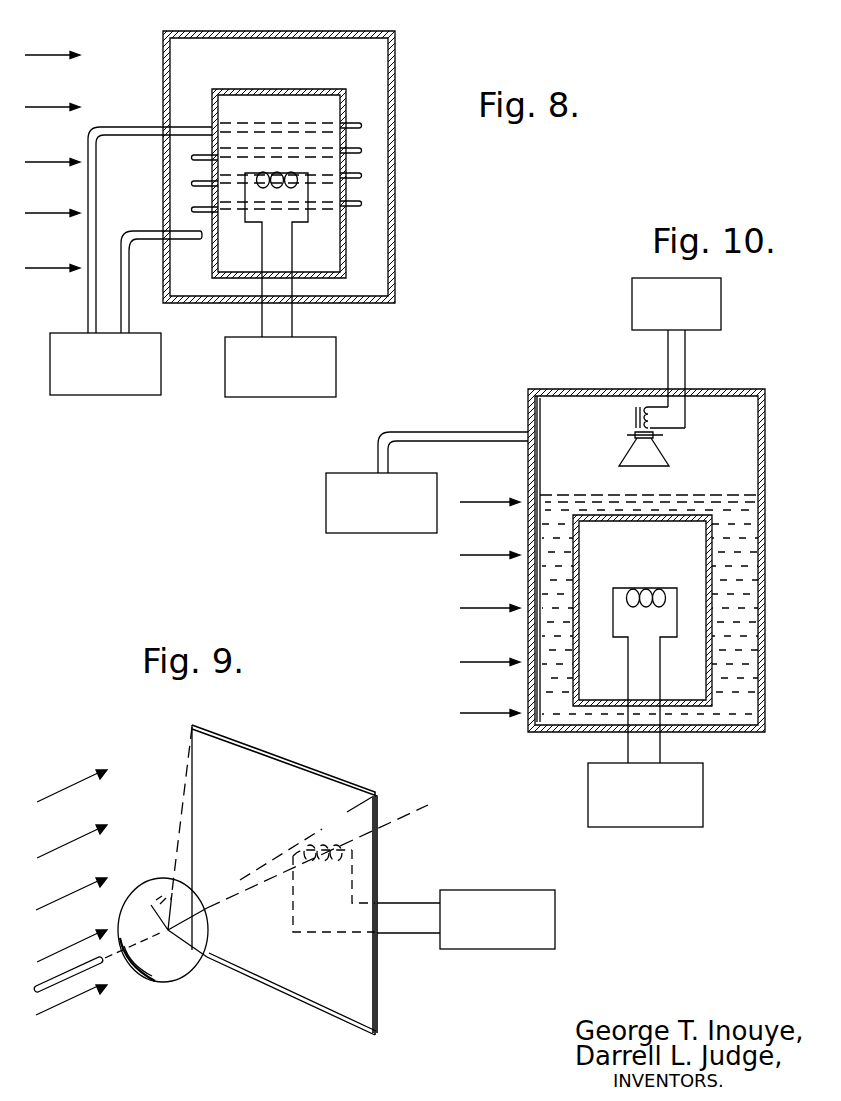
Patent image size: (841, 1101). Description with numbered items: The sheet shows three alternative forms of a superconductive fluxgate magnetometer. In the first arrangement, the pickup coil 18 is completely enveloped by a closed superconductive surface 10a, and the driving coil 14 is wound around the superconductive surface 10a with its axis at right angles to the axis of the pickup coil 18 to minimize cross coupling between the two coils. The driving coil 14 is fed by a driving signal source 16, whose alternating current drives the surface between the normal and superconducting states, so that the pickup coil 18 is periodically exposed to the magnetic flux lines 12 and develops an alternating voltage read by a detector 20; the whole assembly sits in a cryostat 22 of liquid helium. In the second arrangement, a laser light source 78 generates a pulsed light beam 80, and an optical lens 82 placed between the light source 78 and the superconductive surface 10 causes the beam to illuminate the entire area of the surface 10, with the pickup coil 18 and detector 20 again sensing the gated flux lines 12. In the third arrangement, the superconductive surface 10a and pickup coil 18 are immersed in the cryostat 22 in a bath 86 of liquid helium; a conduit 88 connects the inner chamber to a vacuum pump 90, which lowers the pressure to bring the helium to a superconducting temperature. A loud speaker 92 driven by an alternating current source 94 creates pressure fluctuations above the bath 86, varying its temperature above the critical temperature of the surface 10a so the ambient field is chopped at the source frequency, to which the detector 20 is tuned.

In FIG. 9, the superconductive surface 10 is at (318, 773).
In FIG. 8, the closed superconductive surface 10a is at (347, 110).
In FIG. 8, the magnetic flux lines 12 is at (51, 55).
In FIG. 10, the magnetic flux lines 12 is at (483, 505).
In FIG. 9, the magnetic flux lines 12 is at (60, 792).
In FIG. 8, the driving coil 14 is at (148, 127).
In FIG. 8, the driving signal source 16 is at (105, 393).
In FIG. 8, the pickup coil 18 is at (306, 176).
In FIG. 10, the pickup coil 18 is at (664, 593).
In FIG. 9, the pickup coil 18 is at (334, 870).
In FIG. 8, the detector 20 is at (328, 380).
In FIG. 10, the detector 20 is at (704, 805).
In FIG. 9, the detector 20 is at (536, 950).
In FIG. 8, the cryostat 22 is at (395, 73).
In FIG. 9, the laser light source 78 is at (67, 983).
In FIG. 9, the pulsed light beam 80 is at (232, 897).
In FIG. 9, the optical lens 82 is at (188, 975).
In FIG. 10, the liquid helium bath 86 is at (745, 496).
In FIG. 10, the conduit 88 is at (488, 421).
In FIG. 10, the vacuum pump 90 is at (330, 503).
In FIG. 10, the loud speaker 92 is at (668, 462).
In FIG. 10, the alternating current source 94 is at (722, 327).